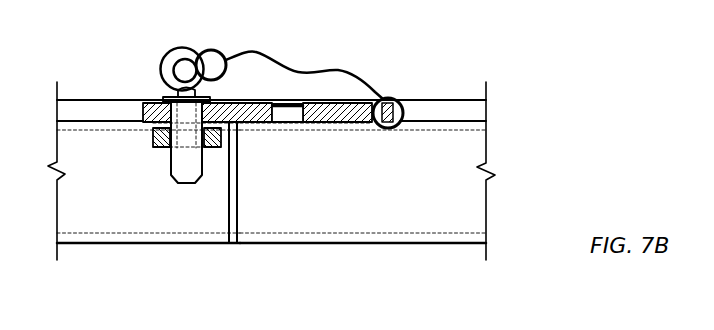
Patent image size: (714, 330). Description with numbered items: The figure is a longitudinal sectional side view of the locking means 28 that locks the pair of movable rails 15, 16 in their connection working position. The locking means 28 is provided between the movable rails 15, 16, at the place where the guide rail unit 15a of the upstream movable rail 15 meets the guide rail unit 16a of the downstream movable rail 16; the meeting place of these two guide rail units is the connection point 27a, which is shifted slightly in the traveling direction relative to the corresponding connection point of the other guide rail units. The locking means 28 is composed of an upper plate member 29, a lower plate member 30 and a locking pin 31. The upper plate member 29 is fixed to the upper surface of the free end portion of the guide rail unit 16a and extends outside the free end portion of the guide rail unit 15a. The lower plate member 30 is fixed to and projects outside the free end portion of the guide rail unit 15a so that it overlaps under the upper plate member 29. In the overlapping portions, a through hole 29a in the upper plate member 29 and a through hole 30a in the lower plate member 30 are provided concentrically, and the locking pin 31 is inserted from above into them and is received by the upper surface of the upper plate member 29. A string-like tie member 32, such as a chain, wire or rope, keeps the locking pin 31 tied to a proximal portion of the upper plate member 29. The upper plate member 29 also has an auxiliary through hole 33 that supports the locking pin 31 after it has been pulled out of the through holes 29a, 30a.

The movable rail 15 is at (85, 99).
The guide rail unit 15a is at (122, 212).
The movable rail 16 is at (442, 99).
The guide rail unit 16a is at (460, 199).
The connection point 27a is at (237, 201).
The locking means 28 is at (156, 97).
The upper plate member 29 is at (335, 107).
The through hole 29a is at (199, 111).
The lower plate member 30 is at (221, 138).
The through hole 30a is at (182, 143).
The locking pin 31 is at (185, 170).
The string-like tie member 32 is at (378, 97).
The auxiliary through hole 33 is at (287, 113).